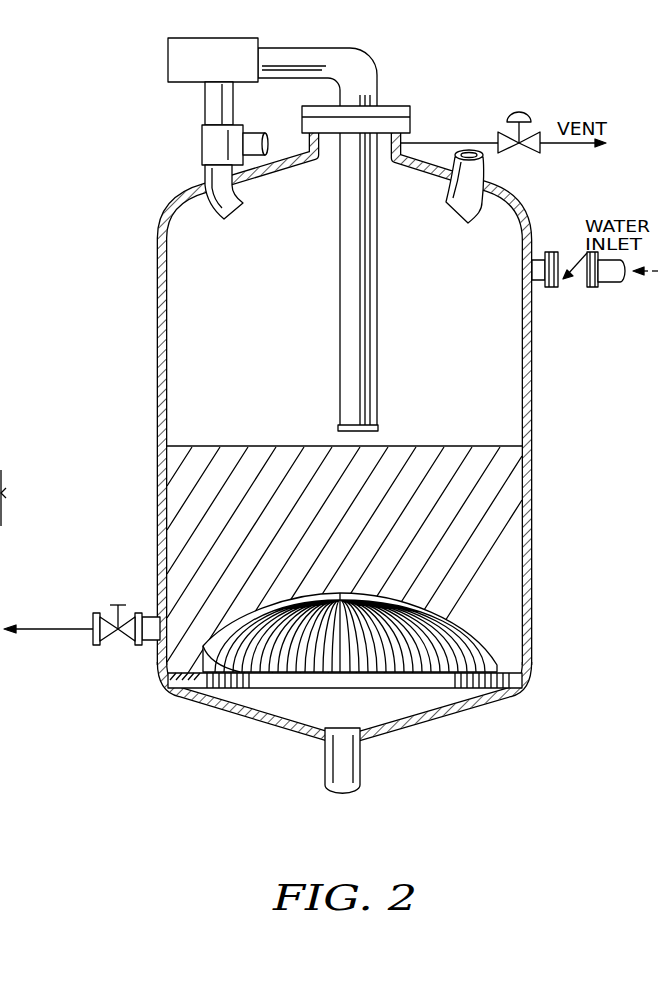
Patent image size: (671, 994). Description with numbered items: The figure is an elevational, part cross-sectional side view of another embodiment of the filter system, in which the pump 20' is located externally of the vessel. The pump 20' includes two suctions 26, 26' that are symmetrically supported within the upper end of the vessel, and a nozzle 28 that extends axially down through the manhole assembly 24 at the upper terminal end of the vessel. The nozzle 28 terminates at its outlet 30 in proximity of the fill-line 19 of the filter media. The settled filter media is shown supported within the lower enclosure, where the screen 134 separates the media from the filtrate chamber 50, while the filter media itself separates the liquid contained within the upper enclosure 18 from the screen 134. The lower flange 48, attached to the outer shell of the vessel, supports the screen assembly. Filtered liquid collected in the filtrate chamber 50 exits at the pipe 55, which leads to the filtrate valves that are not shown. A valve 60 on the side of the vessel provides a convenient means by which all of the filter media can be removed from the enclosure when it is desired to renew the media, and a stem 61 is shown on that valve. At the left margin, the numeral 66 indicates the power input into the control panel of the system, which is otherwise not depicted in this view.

The upper enclosure 18 is at (461, 338).
The fill-line 19 is at (262, 447).
The pump 20' is at (176, 63).
The manhole assembly 24 is at (410, 108).
The suction 26 is at (235, 175).
The suction 26' is at (447, 210).
The nozzle 28 is at (407, 389).
The outlet 30 is at (346, 435).
The lower flange 48 is at (197, 700).
The filtrate chamber 50 is at (283, 711).
The pipe 55 is at (325, 766).
The valve 60 is at (100, 601).
The valve stem 61 is at (120, 603).
The power input 66 is at (15, 498).
The screen 134 is at (405, 586).